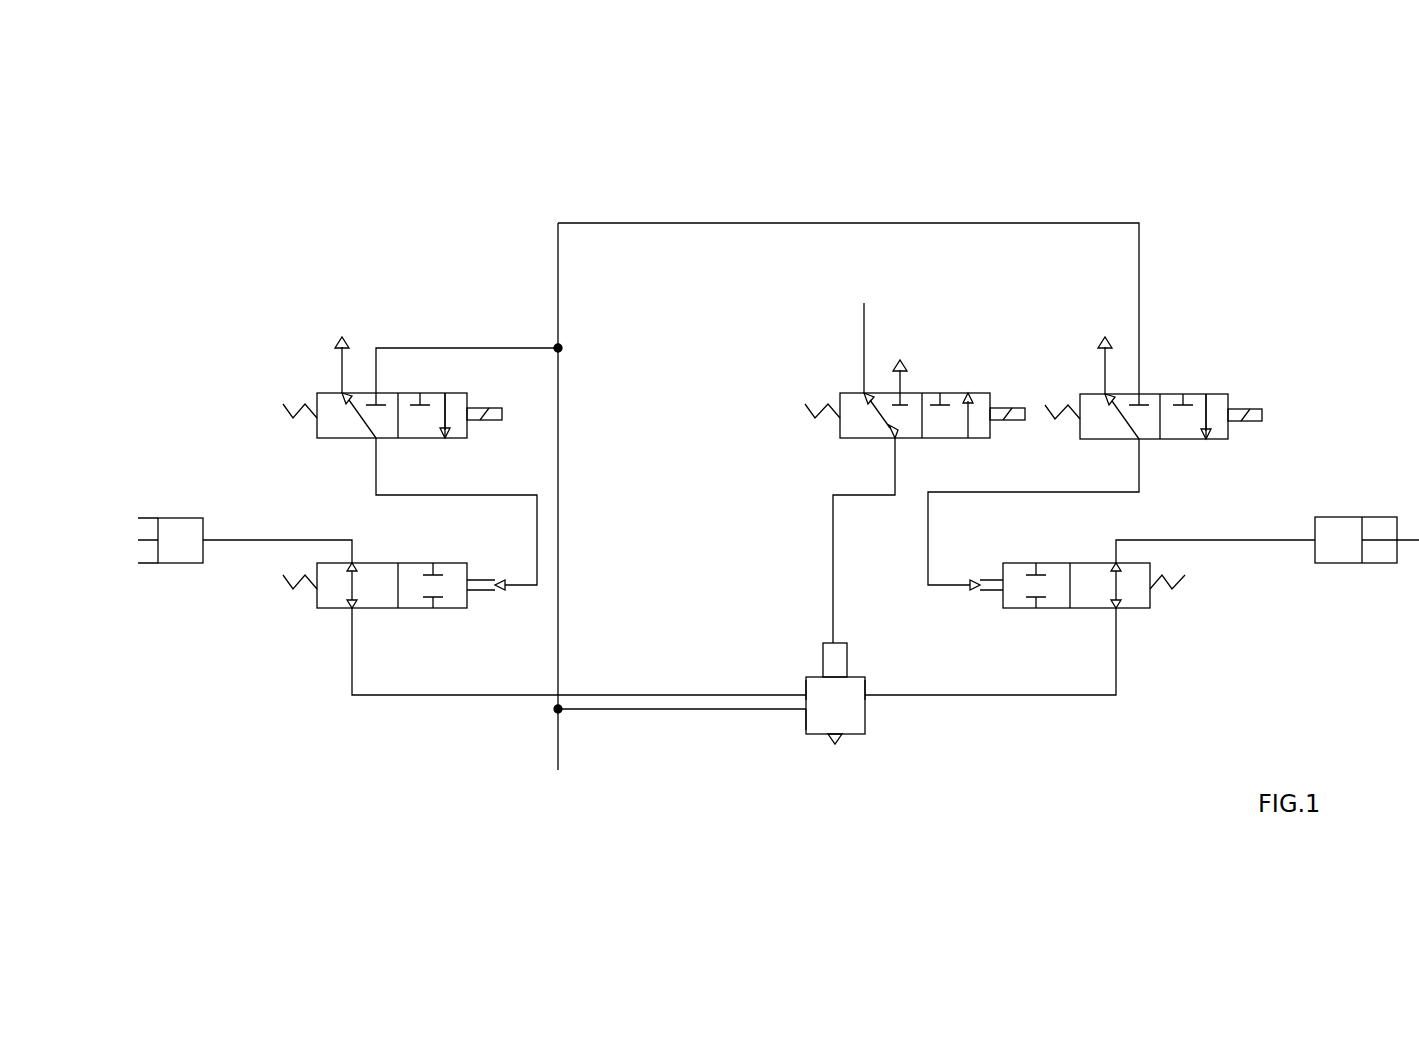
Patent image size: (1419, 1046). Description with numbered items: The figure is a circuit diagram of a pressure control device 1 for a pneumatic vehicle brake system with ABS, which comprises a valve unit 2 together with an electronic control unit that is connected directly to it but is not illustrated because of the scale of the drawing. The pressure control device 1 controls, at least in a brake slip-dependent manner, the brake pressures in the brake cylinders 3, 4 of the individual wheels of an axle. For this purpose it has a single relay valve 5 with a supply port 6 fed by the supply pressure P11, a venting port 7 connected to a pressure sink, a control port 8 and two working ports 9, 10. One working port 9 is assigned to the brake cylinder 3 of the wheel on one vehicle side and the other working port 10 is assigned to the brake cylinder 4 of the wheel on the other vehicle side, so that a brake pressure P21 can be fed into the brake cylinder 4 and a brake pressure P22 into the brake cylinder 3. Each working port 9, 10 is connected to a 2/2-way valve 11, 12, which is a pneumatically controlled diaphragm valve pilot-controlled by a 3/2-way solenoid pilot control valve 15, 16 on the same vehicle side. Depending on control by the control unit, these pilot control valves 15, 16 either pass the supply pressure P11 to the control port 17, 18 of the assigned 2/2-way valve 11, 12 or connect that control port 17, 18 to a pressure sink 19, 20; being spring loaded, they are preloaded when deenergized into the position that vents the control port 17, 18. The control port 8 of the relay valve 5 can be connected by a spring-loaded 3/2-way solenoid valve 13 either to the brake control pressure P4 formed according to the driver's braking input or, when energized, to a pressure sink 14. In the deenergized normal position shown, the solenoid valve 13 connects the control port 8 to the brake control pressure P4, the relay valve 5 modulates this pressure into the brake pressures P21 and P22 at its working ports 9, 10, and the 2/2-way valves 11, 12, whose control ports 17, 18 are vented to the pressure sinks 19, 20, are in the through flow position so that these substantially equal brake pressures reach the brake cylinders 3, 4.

The pressure control device 1 is at (1226, 170).
The valve unit 2 is at (492, 180).
The brake cylinder 3 is at (1340, 525).
The brake cylinder 4 is at (183, 522).
The relay valve 5 is at (868, 728).
The supply port 6 is at (803, 718).
The venting port 7 is at (833, 745).
The control port 8 is at (840, 646).
The working port 9 is at (868, 690).
The working port 10 is at (805, 690).
The 2/2-way valve 11 is at (1085, 570).
The 2/2-way valve 12 is at (389, 575).
The 3/2-way solenoid valve 13 is at (853, 440).
The pressure sink 14 is at (903, 362).
The 3/2-way solenoid pilot control valve 15 is at (1193, 392).
The 3/2-way solenoid pilot control valve 16 is at (327, 396).
The control port 17 is at (968, 578).
The control port 18 is at (501, 580).
The pressure sink 19 is at (1100, 340).
The pressure sink 20 is at (345, 340).
The brake control pressure P4 is at (862, 336).
The supply pressure P11 is at (673, 754).
The brake pressure P21 is at (579, 653).
The brake pressure P22 is at (990, 653).